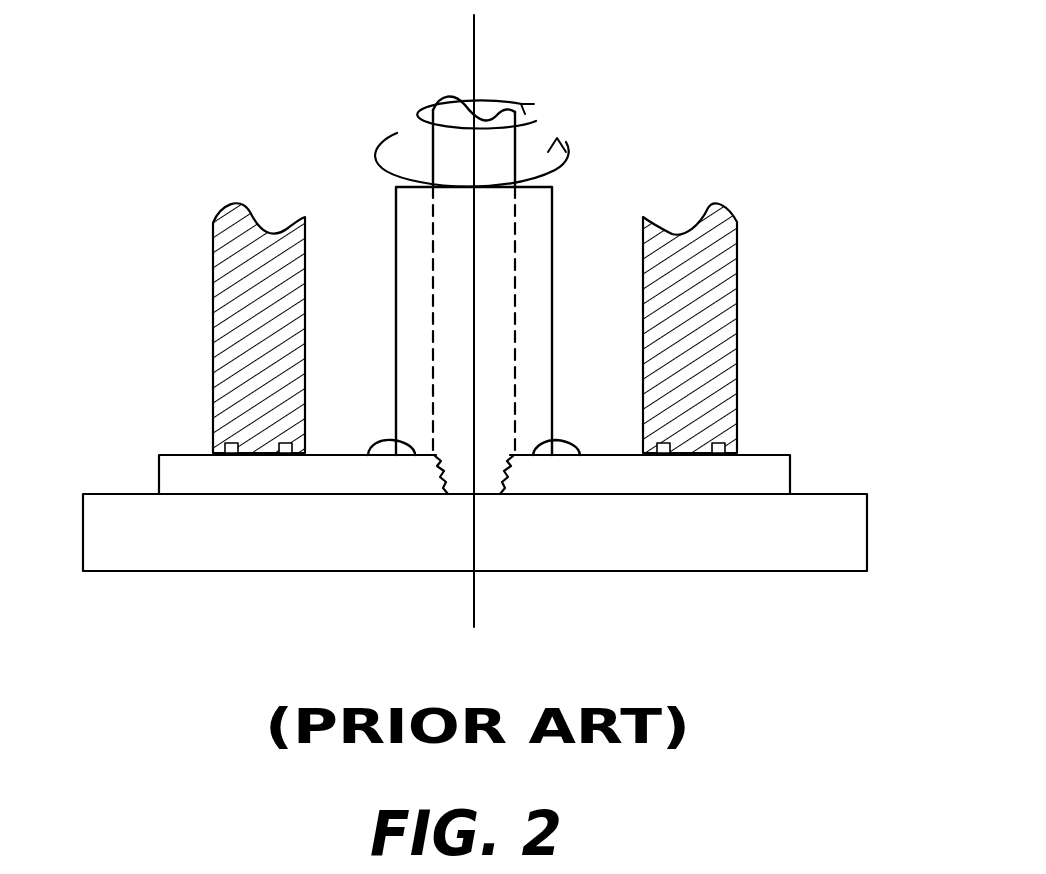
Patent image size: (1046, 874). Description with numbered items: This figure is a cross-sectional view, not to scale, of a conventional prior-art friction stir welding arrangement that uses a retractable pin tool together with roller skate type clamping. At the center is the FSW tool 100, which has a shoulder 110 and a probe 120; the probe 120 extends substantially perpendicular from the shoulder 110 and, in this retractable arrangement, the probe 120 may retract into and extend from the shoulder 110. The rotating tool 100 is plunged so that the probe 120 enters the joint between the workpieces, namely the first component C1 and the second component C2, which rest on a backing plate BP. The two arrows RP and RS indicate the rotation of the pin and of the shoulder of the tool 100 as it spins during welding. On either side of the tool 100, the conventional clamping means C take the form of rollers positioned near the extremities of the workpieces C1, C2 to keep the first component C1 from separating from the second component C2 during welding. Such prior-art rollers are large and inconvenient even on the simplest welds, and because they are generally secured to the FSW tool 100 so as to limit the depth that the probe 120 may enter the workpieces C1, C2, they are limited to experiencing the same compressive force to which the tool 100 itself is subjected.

The FSW tool 100 is at (568, 209).
The shoulder 110 is at (365, 452).
The probe 120 is at (511, 478).
The rotation of screw head RP is at (427, 104).
The rotation of screw RS is at (575, 137).
The conventional clamping means C is at (213, 222).
The first component C1 is at (190, 465).
The second component C2 is at (752, 465).
The backing plate BP is at (790, 568).